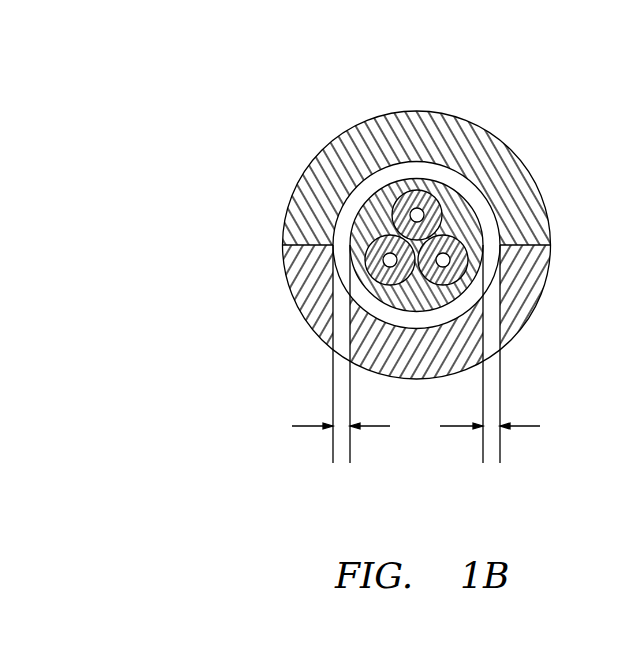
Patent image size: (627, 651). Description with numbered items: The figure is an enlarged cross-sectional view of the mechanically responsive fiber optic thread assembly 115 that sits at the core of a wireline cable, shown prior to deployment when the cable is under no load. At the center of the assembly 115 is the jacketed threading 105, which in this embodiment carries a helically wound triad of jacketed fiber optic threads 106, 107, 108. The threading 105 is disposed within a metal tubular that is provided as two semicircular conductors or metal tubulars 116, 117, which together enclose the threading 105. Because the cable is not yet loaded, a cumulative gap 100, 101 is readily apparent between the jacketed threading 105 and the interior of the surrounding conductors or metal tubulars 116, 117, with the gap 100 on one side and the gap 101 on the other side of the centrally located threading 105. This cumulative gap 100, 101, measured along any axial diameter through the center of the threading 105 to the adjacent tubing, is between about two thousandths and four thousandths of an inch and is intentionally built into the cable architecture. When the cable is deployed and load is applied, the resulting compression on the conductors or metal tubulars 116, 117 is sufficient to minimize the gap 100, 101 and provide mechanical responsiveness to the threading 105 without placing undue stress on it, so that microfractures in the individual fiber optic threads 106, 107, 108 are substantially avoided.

The mechanically responsive fiber optic thread assembly 115 is at (452, 218).
The semicircular conductor or metal tubular 116 is at (527, 220).
The semicircular conductor or metal tubular 117 is at (530, 300).
The jacketed threading 105 is at (357, 218).
The fiber optic thread 106 is at (428, 205).
The fiber optic thread 107 is at (463, 263).
The fiber optic thread 108 is at (440, 268).
The gap 100 is at (341, 460).
The gap 101 is at (488, 460).